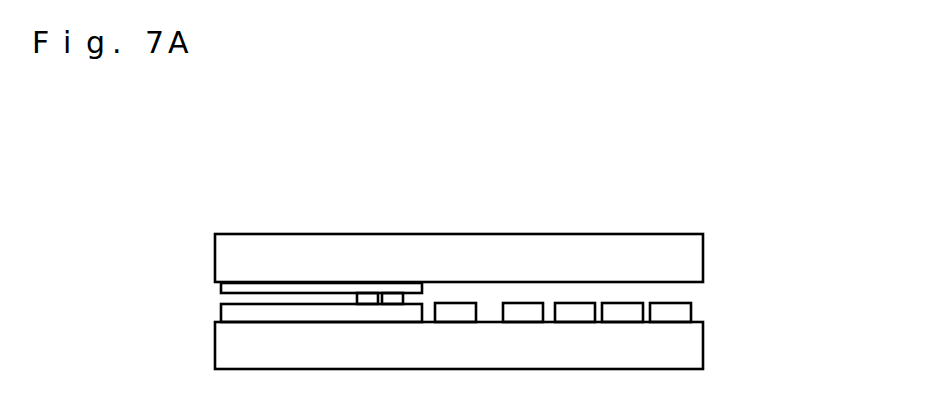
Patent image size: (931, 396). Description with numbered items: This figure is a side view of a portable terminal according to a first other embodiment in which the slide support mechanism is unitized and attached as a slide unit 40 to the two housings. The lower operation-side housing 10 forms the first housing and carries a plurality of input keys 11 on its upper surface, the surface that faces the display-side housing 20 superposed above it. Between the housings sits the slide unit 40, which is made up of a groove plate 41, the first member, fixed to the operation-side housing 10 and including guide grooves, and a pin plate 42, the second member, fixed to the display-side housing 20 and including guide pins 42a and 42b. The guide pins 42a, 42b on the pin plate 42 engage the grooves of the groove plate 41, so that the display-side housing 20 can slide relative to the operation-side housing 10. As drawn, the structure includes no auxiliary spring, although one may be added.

The operation-side housing 10 is at (703, 350).
The input keys 11 is at (692, 317).
The display-side housing 20 is at (703, 253).
The slide unit 40 is at (255, 266).
The groove plate 41 is at (225, 313).
The pin plate 42 is at (222, 287).
The guide pin 42a is at (397, 297).
The guide pin 42b is at (367, 298).